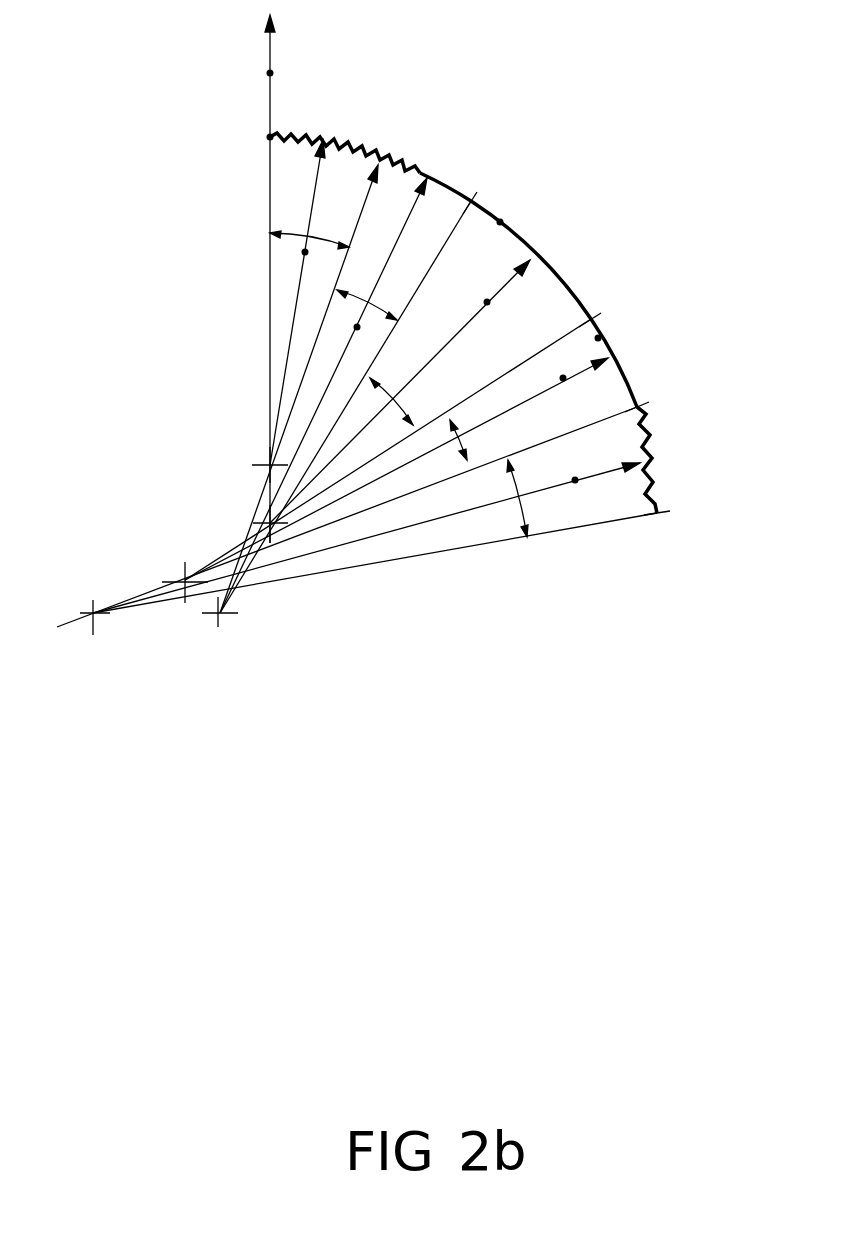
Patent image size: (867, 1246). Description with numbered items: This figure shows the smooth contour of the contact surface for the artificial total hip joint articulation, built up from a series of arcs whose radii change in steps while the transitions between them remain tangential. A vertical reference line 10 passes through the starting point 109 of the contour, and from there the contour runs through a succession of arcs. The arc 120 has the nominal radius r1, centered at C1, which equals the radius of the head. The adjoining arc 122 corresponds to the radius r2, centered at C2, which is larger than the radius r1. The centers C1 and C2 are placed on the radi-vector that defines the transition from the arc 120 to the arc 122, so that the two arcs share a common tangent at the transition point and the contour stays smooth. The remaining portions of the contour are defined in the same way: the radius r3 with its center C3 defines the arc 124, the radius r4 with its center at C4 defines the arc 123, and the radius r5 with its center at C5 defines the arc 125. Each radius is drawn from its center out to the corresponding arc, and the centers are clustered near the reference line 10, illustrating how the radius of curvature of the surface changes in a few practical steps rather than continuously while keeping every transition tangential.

The reference axis 10 is at (270, 73).
The starting point of profile on axis 109 is at (270, 137).
The arc 120 is at (500, 222).
The arc 122 is at (598, 338).
The arc 123 is at (443, 175).
The arc 124 is at (640, 437).
The arc 125 is at (433, 107).
The radius r1 is at (487, 303).
The radius r2 is at (563, 378).
The radius r3 is at (575, 480).
The radius r4 is at (242, 322).
The radius r5 is at (223, 248).
The center C1 is at (173, 492).
The center C2 is at (150, 678).
The center C3 is at (102, 550).
The center C4 is at (220, 617).
The center C5 is at (213, 423).